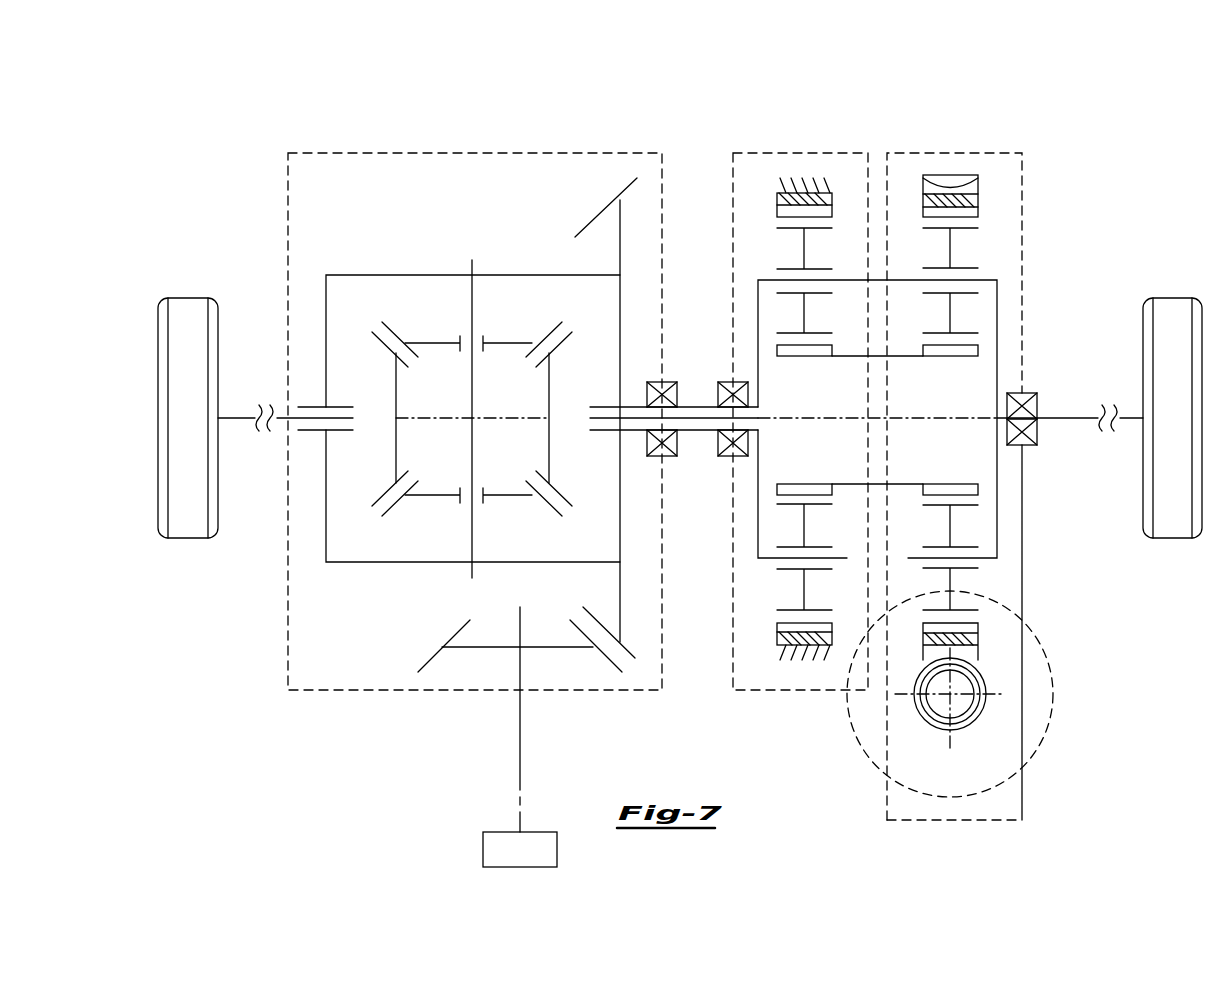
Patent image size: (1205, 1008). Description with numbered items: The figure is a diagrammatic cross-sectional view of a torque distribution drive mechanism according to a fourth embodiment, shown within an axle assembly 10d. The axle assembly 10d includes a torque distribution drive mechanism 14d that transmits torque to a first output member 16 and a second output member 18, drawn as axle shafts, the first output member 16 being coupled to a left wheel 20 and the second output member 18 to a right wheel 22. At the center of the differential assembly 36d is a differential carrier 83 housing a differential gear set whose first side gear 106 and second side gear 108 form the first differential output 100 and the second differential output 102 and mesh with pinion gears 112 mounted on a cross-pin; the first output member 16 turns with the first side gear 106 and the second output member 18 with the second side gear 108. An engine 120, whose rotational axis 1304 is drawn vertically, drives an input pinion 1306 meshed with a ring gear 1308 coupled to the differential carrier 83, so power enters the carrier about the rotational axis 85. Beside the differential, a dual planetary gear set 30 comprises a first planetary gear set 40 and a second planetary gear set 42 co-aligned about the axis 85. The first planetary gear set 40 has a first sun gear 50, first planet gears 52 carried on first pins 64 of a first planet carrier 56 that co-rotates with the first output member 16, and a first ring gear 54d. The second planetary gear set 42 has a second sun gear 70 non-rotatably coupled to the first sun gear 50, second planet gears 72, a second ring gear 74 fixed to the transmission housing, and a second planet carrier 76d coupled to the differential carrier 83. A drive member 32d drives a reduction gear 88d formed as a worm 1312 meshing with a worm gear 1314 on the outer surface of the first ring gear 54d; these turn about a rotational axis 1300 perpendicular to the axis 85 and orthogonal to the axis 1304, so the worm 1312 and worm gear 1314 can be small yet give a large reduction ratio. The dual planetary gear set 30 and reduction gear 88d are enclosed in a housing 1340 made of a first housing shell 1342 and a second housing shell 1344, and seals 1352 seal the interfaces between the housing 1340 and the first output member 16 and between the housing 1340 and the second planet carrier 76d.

The axle assembly 10d is at (662, 436).
The torque distribution drive mechanism 14d is at (930, 436).
The differential assembly 36d is at (352, 183).
The differential carrier 83 is at (325, 293).
The first differential output 100 is at (470, 262).
The pinion gears 112 is at (430, 343).
The second side gear 108 is at (397, 447).
The first side gear 106 is at (548, 462).
The common longitudinal axis 85 is at (505, 418).
The second differential output 102 is at (395, 437).
The ring gear 1308 is at (610, 206).
The input pinion 1306 is at (441, 647).
The rotational axis 1304 is at (518, 803).
The engine 120 is at (482, 850).
The second output member 18 is at (237, 419).
The right wheel 22 is at (185, 539).
The first output member 16 is at (1082, 419).
The left wheel 20 is at (1172, 539).
The seals 1352 is at (733, 381).
The second planet carrier 76d is at (757, 298).
The first planet carrier 56 is at (999, 298).
The first pins 64 is at (985, 279).
The dual planetary gear set 30 is at (877, 202).
The second planetary gear set 42 is at (805, 252).
The first planetary gear set 40 is at (938, 245).
The second housing shell 1344 is at (831, 152).
The first housing shell 1342 is at (978, 152).
The housing 1340 is at (921, 436).
The second sun gear 70 is at (810, 360).
The first sun gear 50 is at (945, 357).
The second planet gears 72 is at (805, 527).
The first planet gears 52 is at (950, 527).
The second ring gear 74 is at (776, 628).
The first ring gear 54d is at (970, 630).
The worm 1312 is at (981, 684).
The worm gear 1314 is at (924, 653).
The rotational axis 1300 is at (949, 695).
The reduction gear 88d is at (978, 718).
The drive member 32d is at (1054, 716).